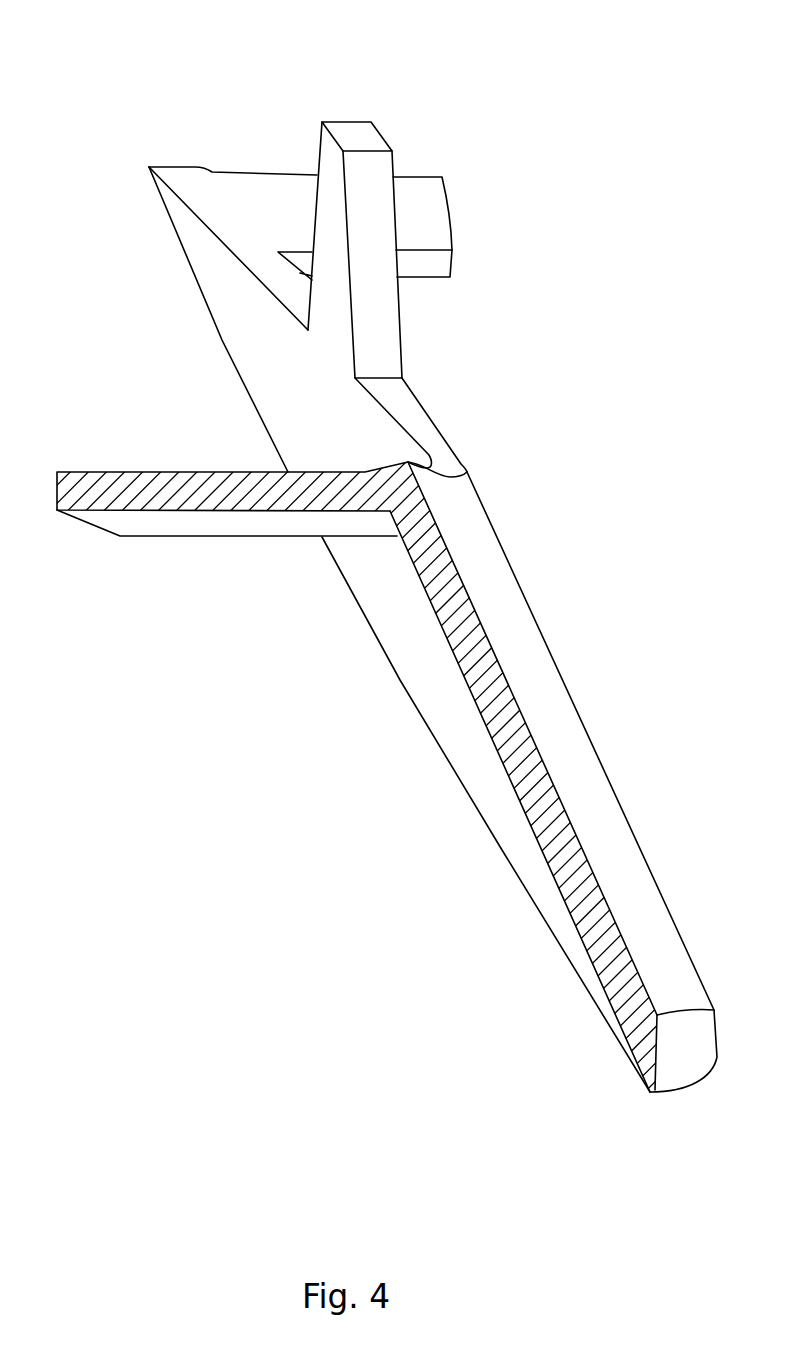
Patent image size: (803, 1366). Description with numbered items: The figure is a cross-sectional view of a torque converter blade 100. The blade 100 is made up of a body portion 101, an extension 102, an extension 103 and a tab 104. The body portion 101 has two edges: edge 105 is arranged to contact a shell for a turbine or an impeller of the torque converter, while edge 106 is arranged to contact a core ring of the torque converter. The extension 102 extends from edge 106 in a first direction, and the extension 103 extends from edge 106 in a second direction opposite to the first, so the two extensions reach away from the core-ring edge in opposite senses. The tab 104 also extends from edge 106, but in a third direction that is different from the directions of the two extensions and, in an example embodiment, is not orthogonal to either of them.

The blade 100 is at (578, 98).
The body portion 101 is at (184, 268).
The extension 102 is at (447, 215).
The extension 103 is at (145, 536).
The tab 104 is at (350, 122).
The edge 105 is at (363, 618).
The edge 106 is at (418, 422).